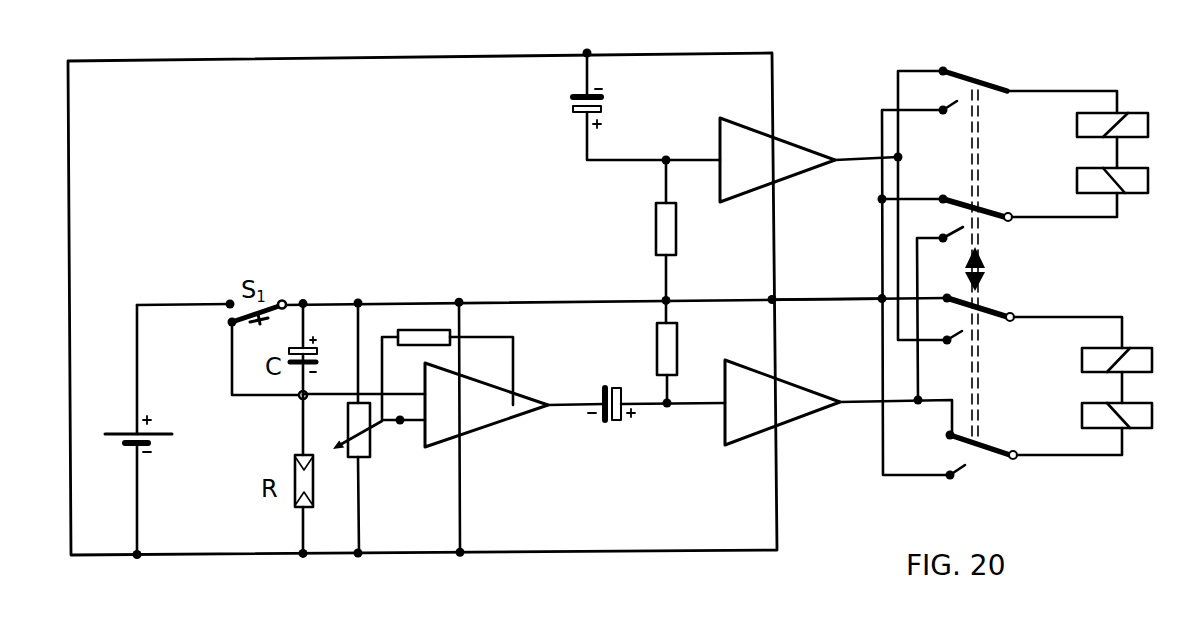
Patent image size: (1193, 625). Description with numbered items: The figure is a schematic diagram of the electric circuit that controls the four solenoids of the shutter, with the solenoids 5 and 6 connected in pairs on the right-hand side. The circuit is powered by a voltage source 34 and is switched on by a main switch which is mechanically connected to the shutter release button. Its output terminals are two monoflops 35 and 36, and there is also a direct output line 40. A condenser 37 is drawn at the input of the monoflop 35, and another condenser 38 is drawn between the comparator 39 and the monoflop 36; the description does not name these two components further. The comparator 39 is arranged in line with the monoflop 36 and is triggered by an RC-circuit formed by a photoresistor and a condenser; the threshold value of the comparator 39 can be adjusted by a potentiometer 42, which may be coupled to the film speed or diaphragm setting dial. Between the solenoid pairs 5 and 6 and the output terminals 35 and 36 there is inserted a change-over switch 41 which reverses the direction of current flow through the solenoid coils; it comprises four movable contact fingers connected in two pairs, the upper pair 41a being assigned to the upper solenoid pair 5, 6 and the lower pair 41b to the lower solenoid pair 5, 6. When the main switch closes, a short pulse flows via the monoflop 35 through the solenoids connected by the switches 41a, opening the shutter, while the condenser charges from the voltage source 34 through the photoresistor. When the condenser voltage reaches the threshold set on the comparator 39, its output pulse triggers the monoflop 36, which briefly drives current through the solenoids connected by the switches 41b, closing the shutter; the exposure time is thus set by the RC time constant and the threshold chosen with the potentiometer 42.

The voltage source 34 is at (125, 440).
The monoflop 35 is at (758, 155).
The monoflop 36 is at (770, 413).
The capacitor 37 is at (577, 93).
The capacitor 38 is at (617, 422).
The comparator 39 is at (478, 402).
The direct output line 40 is at (828, 293).
The change-over switch 41 is at (987, 270).
The switches 41a is at (1000, 95).
The switches 41b is at (1002, 322).
The potentiometer 42 is at (363, 448).
The solenoid 5 is at (1167, 350).
The solenoid 6 is at (1170, 428).